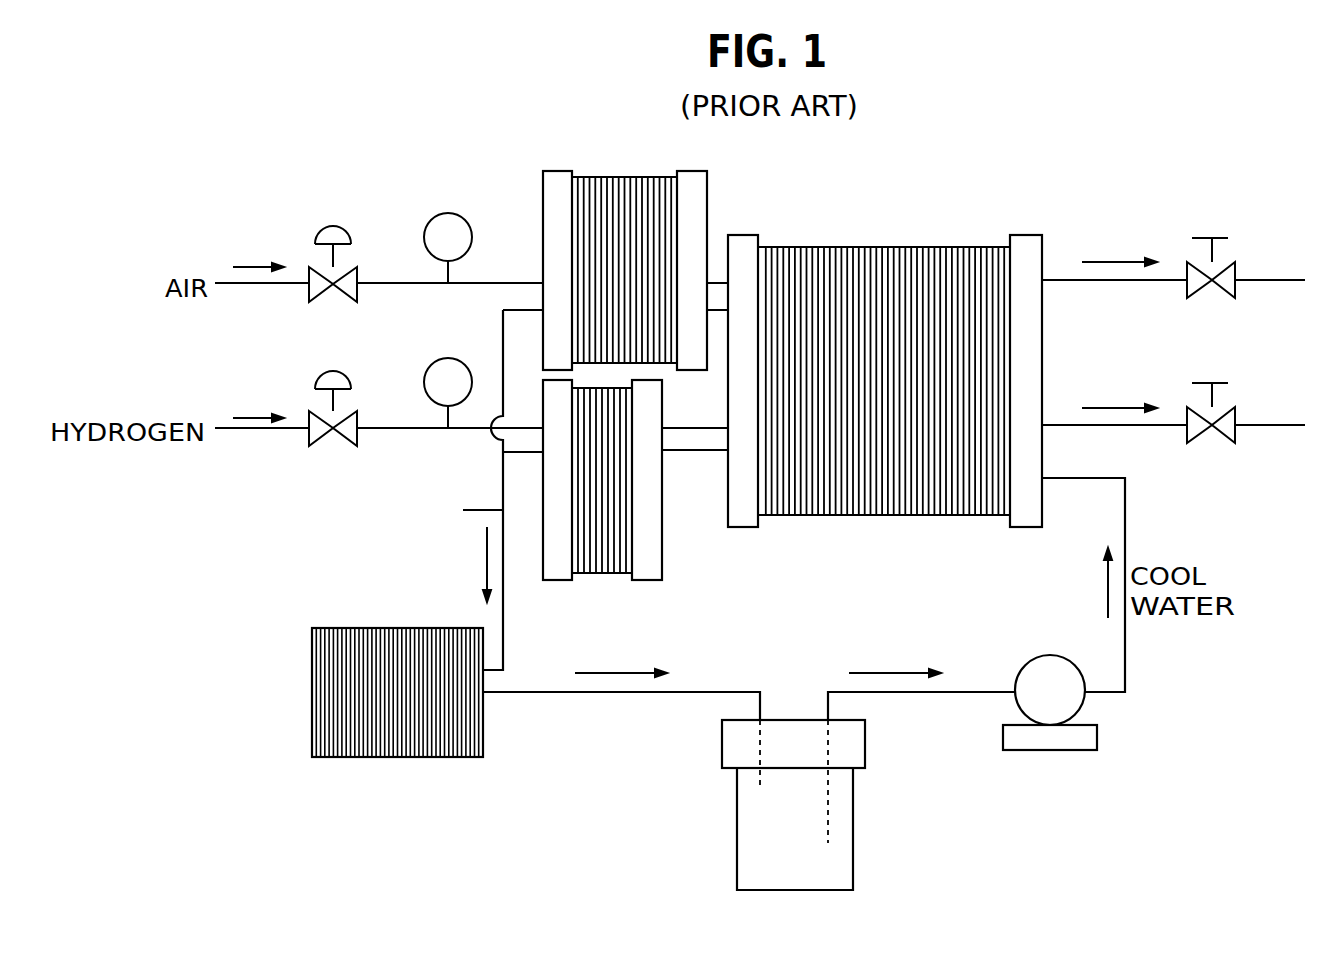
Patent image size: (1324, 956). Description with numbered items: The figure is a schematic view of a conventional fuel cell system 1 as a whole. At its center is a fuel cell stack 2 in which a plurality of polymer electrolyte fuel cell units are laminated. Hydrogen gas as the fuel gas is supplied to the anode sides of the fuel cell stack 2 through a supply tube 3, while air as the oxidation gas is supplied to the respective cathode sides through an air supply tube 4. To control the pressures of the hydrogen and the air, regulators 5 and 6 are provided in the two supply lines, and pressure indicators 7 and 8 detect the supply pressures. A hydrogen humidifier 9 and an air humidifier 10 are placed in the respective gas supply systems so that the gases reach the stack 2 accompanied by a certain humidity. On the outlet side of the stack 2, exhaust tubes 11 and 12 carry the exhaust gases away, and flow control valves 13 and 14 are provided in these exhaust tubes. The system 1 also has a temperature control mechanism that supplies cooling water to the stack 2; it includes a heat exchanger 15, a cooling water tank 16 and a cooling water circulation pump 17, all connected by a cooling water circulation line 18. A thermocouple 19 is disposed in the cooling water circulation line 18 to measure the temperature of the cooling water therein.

The fuel cell system 1 is at (279, 181).
The fuel cell stack 2 is at (862, 245).
The supply tube 3 is at (258, 430).
The air supply tube 4 is at (265, 285).
The regulator 5 is at (320, 440).
The regulator 6 is at (332, 230).
The pressure indicator 7 is at (427, 378).
The pressure indicator 8 is at (448, 213).
The hydrogen humidifier 9 is at (650, 562).
The air humidifier 10 is at (693, 195).
The exhaust tube 11 is at (1122, 427).
The exhaust tube 12 is at (1090, 281).
The flow control valve 13 is at (1196, 432).
The flow control valve 14 is at (1237, 272).
The heat exchanger 15 is at (443, 757).
The cooling water tank 16 is at (852, 813).
The cooling water circulation pump 17 is at (1063, 737).
The cooling water circulation line 18 is at (503, 640).
The thermocouple 19 is at (463, 510).